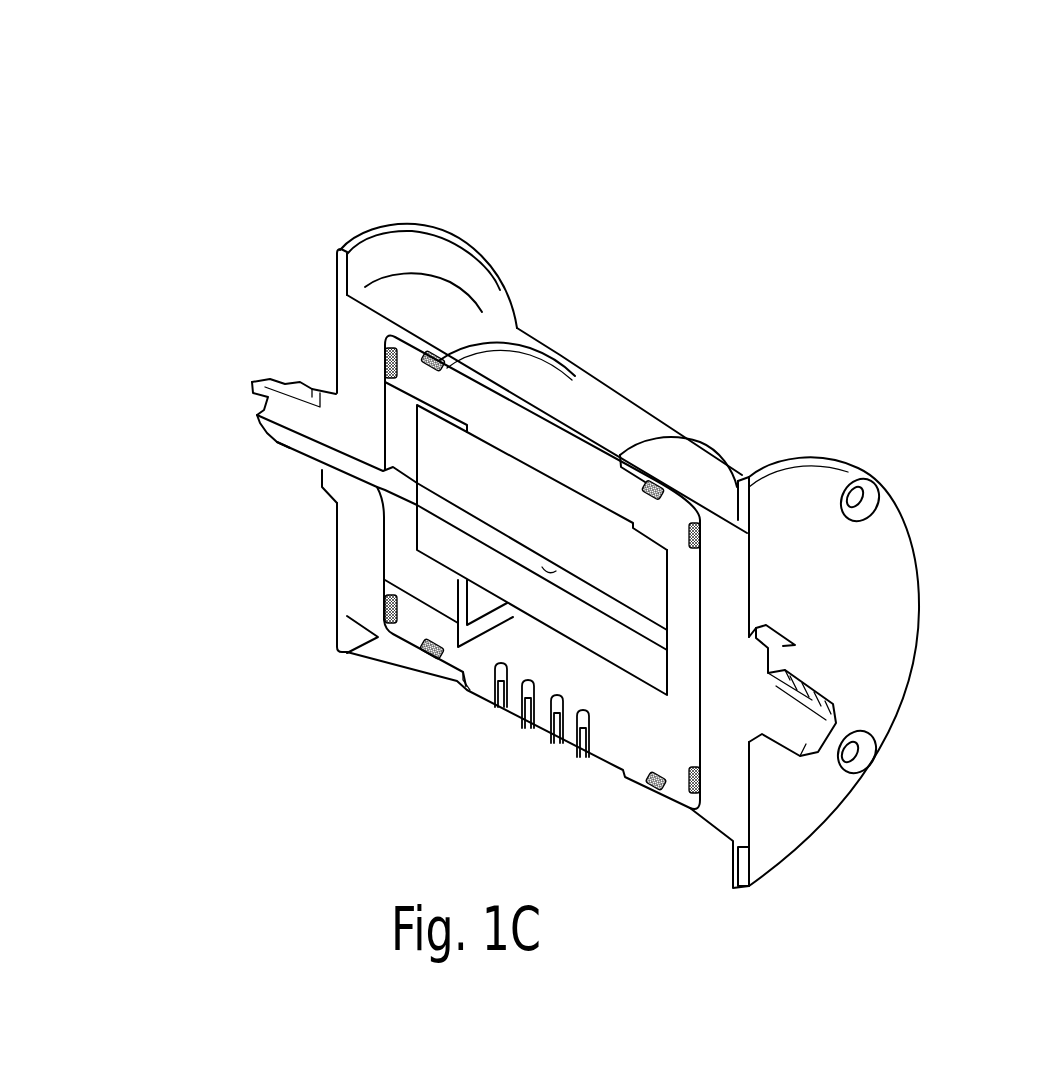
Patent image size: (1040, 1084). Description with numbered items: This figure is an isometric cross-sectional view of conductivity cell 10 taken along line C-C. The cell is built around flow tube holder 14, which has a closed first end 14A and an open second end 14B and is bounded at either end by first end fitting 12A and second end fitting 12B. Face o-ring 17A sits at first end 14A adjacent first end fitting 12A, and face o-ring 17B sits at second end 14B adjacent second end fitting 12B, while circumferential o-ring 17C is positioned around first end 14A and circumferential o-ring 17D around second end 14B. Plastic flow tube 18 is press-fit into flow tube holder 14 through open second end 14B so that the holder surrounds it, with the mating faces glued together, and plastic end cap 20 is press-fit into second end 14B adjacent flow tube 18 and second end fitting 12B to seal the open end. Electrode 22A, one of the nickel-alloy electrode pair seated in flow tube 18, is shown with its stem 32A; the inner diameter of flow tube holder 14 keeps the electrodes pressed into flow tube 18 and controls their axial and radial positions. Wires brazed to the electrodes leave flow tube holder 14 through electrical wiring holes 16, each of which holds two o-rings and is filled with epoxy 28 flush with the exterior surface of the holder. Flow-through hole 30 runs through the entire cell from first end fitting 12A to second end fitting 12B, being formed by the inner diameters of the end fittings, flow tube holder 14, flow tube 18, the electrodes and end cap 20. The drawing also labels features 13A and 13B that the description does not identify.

The conductivity cell 10 is at (278, 122).
The first end fitting 12A is at (866, 587).
The second end fitting 12B is at (413, 312).
The first latch flange 13A is at (833, 718).
The second latch flange 13B is at (297, 448).
The flow tube holder 14 is at (556, 385).
The first end 14A is at (680, 610).
The second end 14B is at (428, 386).
The electrical wiring holes 16 is at (577, 757).
The o-ring 17A is at (392, 345).
The o-ring 17B is at (705, 530).
The o-ring 17C is at (432, 356).
The o-ring 17D is at (655, 487).
The flow tube 18 is at (573, 540).
The end cap 20 is at (413, 433).
The electrode 22A is at (546, 565).
The epoxy 28 is at (482, 703).
The flow-through hole 30 is at (842, 754).
The stem 32A is at (548, 575).